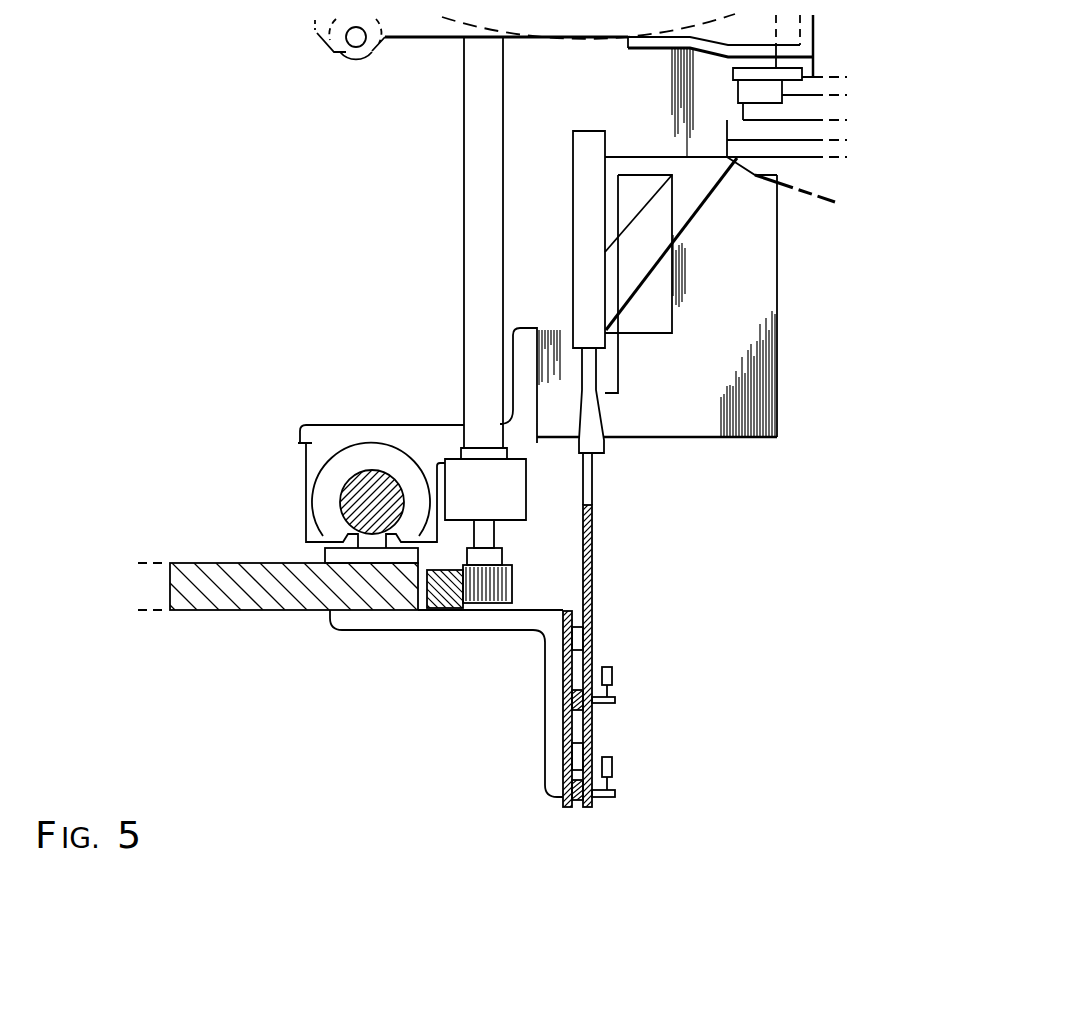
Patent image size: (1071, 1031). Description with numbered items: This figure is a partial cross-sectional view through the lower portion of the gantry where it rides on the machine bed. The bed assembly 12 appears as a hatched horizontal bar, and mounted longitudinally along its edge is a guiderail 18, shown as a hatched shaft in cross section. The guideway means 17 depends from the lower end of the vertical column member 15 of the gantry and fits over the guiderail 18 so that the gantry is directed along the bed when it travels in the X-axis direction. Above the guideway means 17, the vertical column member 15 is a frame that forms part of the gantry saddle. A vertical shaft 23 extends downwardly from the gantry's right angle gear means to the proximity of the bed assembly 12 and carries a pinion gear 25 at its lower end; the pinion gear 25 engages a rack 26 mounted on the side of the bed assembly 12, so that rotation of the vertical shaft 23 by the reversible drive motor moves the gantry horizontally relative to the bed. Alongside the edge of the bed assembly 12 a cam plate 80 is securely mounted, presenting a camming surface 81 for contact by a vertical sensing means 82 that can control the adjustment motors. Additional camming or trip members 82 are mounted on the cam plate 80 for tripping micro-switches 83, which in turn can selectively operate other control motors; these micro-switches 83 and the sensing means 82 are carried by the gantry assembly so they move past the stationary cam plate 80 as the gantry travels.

The bed assembly 12 is at (228, 534).
The vertical column member 15 is at (752, 440).
The guideway means 17 is at (306, 482).
The guiderail 18 is at (372, 471).
The vertical shaft 23 is at (464, 210).
The pinion gear 25 is at (512, 566).
The rack 26 is at (448, 610).
The cam plate 80 is at (593, 583).
The camming surface 81 is at (592, 492).
The camming or trip member 82 is at (620, 455).
The micro-switch 83 is at (613, 675).